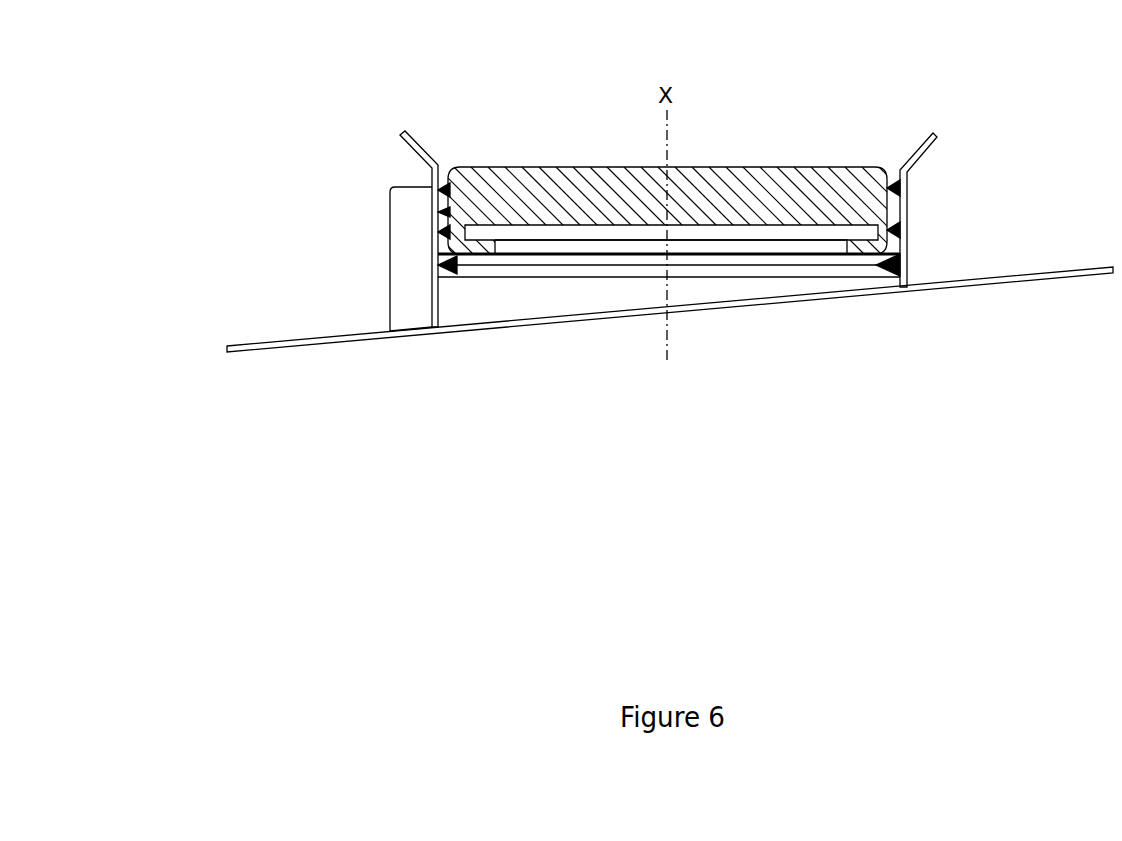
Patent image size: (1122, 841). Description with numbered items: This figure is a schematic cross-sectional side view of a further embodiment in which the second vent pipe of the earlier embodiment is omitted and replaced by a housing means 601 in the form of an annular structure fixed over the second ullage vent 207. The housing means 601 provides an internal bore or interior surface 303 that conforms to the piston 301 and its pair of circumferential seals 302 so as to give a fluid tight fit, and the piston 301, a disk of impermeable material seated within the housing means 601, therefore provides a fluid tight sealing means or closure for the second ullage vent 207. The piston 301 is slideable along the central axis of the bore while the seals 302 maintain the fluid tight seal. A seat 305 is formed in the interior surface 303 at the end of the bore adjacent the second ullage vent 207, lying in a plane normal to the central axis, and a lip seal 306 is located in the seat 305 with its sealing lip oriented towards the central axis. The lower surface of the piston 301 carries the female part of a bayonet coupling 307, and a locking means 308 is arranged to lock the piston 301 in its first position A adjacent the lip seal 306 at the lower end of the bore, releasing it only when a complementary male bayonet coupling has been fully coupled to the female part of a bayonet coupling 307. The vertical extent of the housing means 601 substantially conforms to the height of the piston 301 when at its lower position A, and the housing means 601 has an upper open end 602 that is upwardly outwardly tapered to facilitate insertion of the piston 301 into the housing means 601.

The second ullage vent 207 is at (537, 325).
The piston 301 is at (800, 167).
The circumferential seals 302 is at (905, 232).
The interior surface 303 is at (899, 172).
The seat 305 is at (438, 265).
The lip seal 306 is at (905, 265).
The female part of a bayonet coupling 307 is at (847, 240).
The locking means 308 is at (405, 323).
The housing means 601 is at (433, 295).
The upper open end 602 is at (423, 150).
The first position A is at (438, 212).